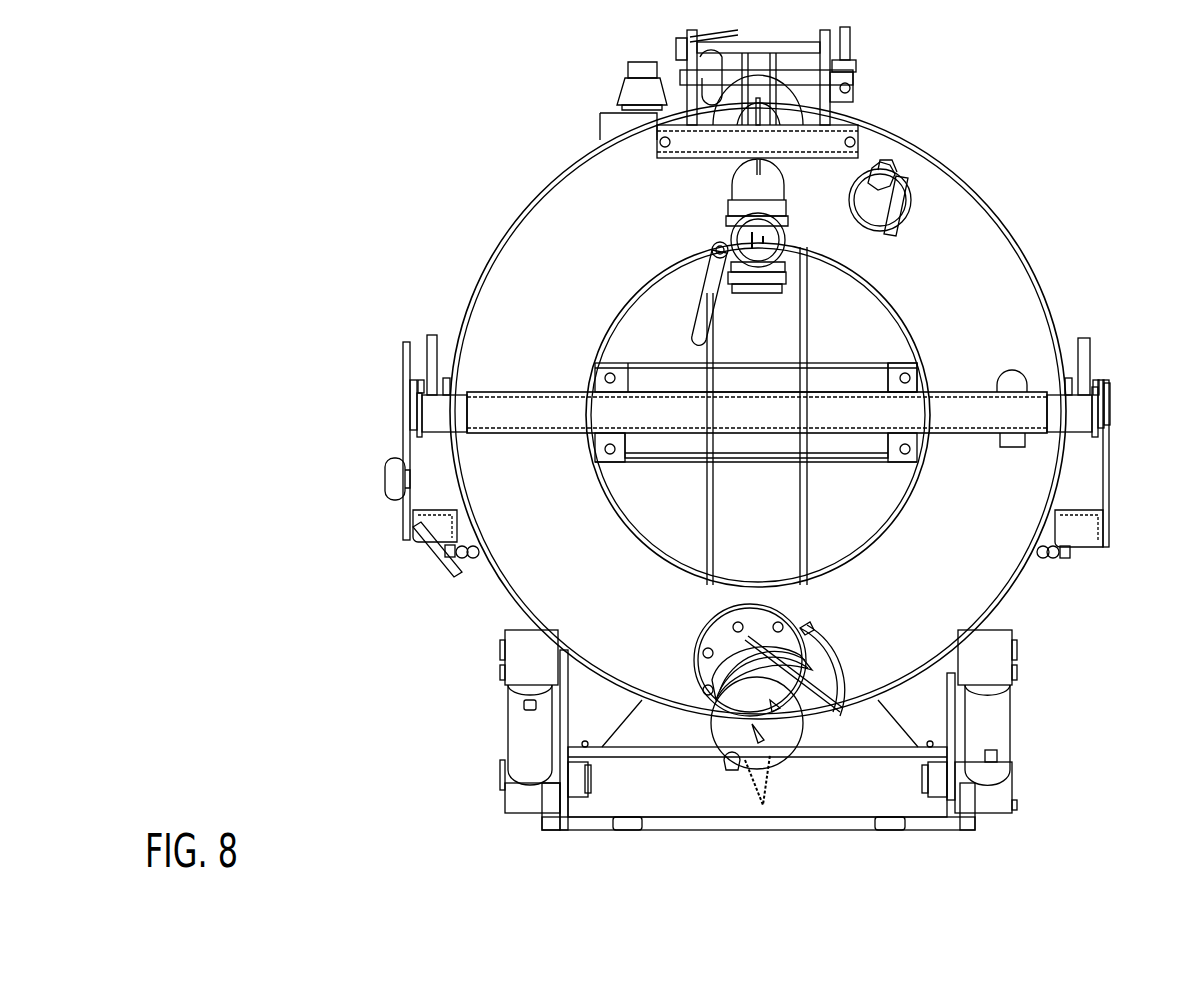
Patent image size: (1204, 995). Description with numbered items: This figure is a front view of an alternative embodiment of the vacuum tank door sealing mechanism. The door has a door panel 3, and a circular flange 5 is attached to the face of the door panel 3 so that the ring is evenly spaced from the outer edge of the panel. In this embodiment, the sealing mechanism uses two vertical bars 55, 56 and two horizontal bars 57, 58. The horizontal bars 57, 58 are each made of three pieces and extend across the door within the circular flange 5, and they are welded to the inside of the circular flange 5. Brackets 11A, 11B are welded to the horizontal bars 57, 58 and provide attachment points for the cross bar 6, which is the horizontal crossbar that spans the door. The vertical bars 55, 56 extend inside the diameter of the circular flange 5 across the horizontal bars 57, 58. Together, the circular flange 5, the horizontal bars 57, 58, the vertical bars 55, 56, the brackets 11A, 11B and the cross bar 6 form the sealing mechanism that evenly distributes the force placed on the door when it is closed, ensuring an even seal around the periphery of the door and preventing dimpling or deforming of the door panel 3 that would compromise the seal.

The door panel 3 is at (570, 575).
The circular flange 5 is at (870, 285).
The cross bar 6 is at (1050, 410).
The bracket 11A is at (908, 385).
The bracket 11B is at (597, 445).
The vertical bar 55 is at (805, 335).
The vertical bar 56 is at (703, 347).
The horizontal bar 57 is at (850, 458).
The horizontal bar 58 is at (857, 363).